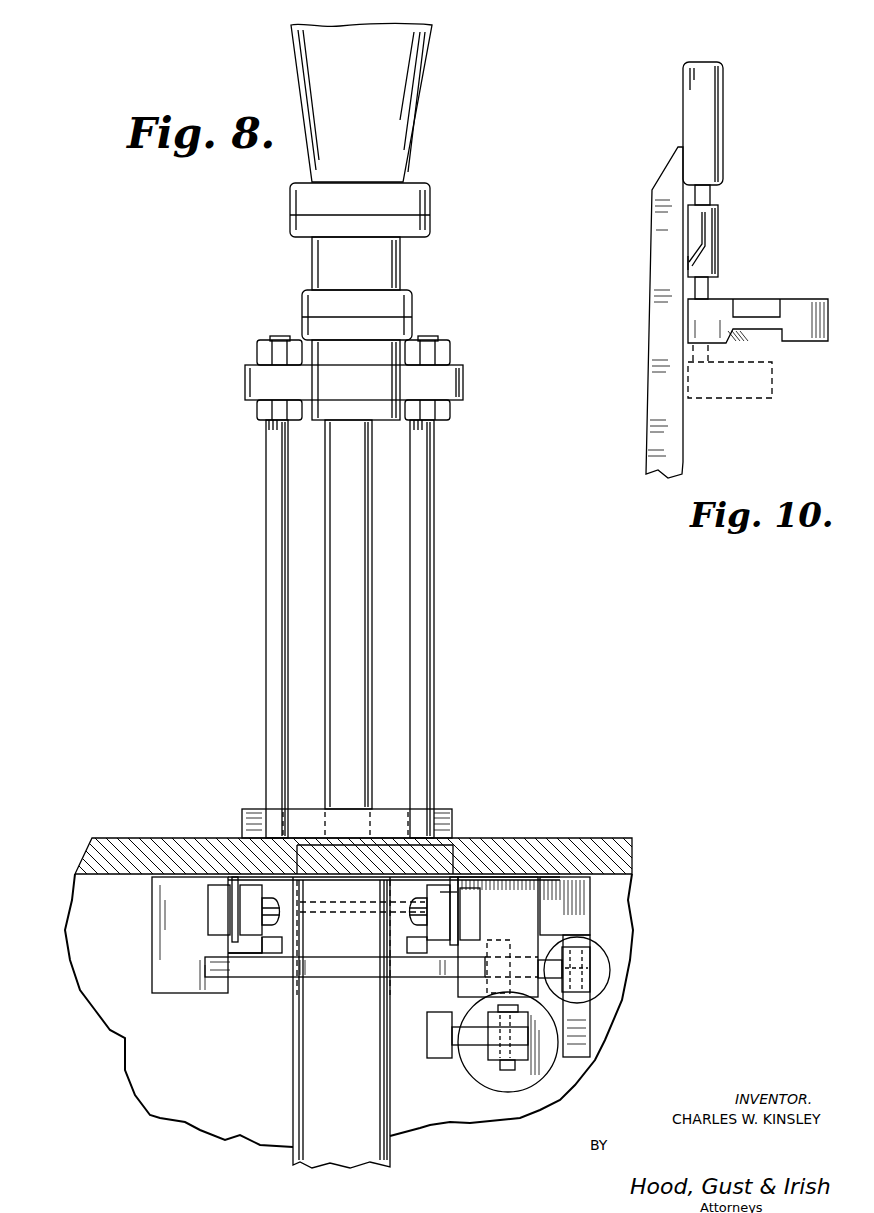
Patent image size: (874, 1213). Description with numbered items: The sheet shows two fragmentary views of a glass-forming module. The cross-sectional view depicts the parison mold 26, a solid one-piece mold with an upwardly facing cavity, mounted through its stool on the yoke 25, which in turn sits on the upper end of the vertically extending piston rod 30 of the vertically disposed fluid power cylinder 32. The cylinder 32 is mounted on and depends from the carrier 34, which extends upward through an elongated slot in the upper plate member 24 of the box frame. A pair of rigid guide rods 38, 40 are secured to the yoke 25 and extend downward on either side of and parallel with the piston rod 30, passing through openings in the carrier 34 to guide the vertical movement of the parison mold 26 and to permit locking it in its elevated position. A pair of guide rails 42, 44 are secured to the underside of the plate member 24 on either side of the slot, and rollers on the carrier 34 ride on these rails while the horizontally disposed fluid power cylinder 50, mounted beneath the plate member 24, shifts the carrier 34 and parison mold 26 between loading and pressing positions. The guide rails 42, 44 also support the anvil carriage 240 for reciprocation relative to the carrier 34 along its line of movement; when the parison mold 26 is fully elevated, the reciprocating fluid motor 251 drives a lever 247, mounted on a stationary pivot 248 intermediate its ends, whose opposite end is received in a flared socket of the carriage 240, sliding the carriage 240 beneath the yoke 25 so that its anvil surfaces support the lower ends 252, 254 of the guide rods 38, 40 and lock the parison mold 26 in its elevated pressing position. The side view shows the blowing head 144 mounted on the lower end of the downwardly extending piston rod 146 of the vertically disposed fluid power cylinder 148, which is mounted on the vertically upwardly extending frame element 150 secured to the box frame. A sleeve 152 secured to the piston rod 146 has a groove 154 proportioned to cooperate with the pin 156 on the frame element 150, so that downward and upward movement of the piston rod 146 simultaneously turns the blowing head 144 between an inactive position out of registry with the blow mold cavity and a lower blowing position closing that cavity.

In FIG. 8, the parison mold 26 is at (424, 78).
In FIG. 8, the yoke 25 is at (463, 378).
In FIG. 8, the guide rod 40 is at (272, 570).
In FIG. 8, the guide rod 38 is at (430, 552).
In FIG. 8, the piston rod 30 is at (357, 535).
In FIG. 8, the carrier 34 is at (437, 808).
In FIG. 8, the upper plate member 24 is at (513, 838).
In FIG. 8, the fluid power cylinder 32 is at (295, 1065).
In FIG. 8, the guide rail 42 is at (152, 896).
In FIG. 8, the anvil carriage 240 is at (278, 985).
In FIG. 8, the lower end of guide rod 254 is at (252, 985).
In FIG. 8, the lower end of guide rod 252 is at (418, 977).
In FIG. 8, the stationary pivot 248 is at (503, 940).
In FIG. 8, the lever 247 is at (545, 960).
In FIG. 8, the guide rail 44 is at (545, 905).
In FIG. 8, the reciprocating fluid motor 251 is at (608, 955).
In FIG. 8, the horizontally disposed fluid power cylinder 50 is at (475, 1080).
In FIG. 10, the fluid power cylinder 148 is at (722, 88).
In FIG. 10, the sleeve 152 is at (718, 212).
In FIG. 10, the groove 154 is at (706, 245).
In FIG. 10, the pin 156 is at (688, 263).
In FIG. 10, the frame element 150 is at (660, 200).
In FIG. 10, the piston rod 146 is at (712, 292).
In FIG. 10, the blowing head 144 is at (805, 298).